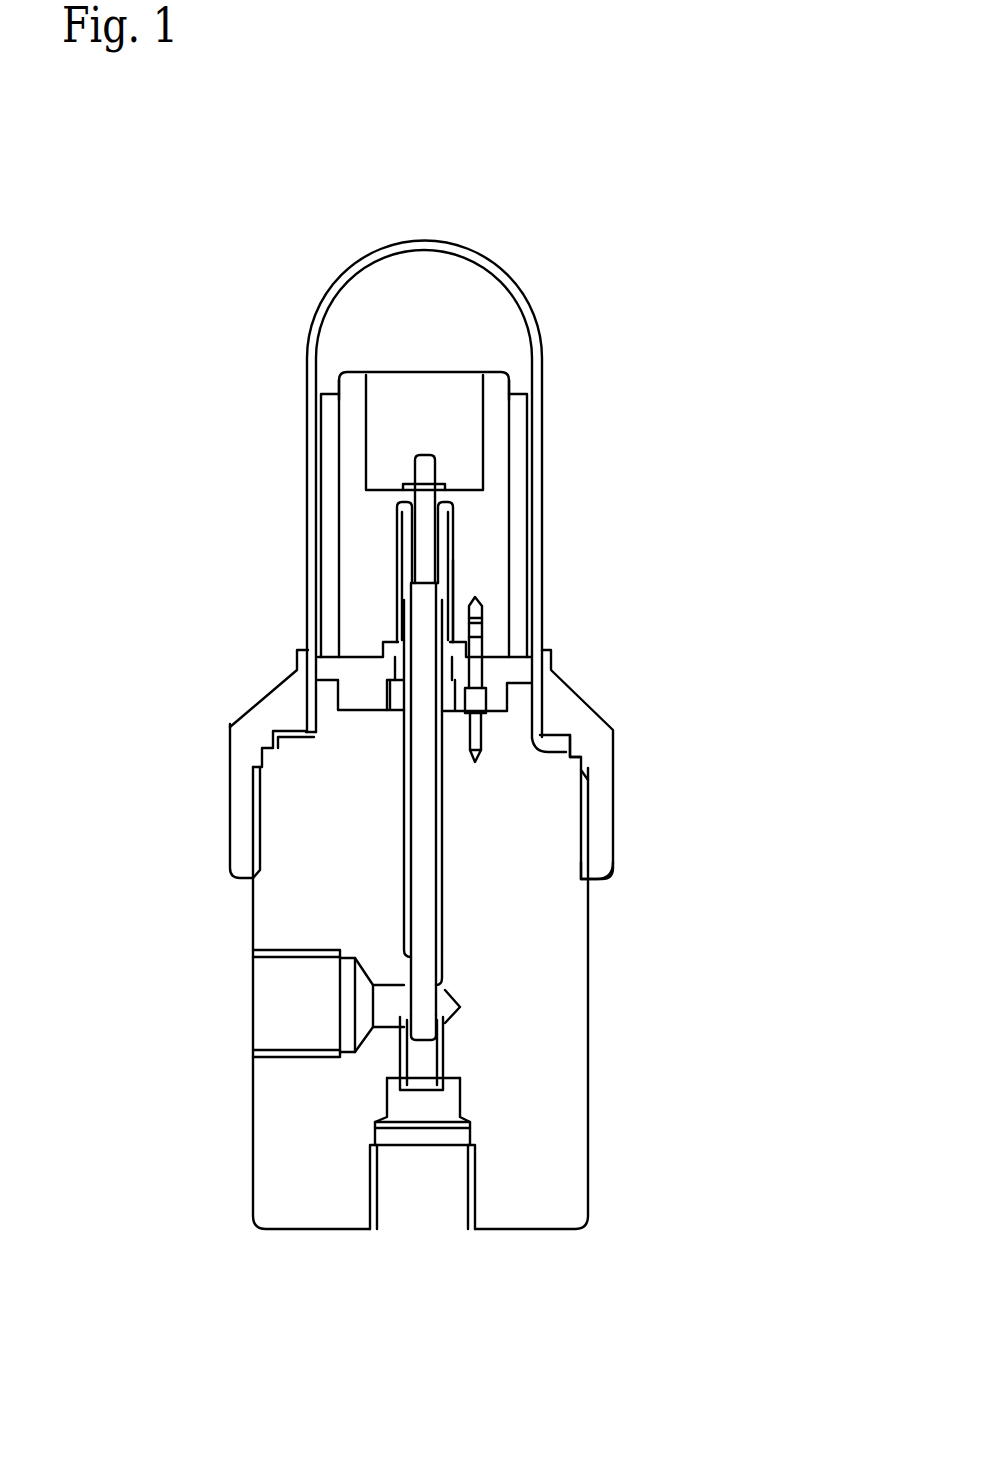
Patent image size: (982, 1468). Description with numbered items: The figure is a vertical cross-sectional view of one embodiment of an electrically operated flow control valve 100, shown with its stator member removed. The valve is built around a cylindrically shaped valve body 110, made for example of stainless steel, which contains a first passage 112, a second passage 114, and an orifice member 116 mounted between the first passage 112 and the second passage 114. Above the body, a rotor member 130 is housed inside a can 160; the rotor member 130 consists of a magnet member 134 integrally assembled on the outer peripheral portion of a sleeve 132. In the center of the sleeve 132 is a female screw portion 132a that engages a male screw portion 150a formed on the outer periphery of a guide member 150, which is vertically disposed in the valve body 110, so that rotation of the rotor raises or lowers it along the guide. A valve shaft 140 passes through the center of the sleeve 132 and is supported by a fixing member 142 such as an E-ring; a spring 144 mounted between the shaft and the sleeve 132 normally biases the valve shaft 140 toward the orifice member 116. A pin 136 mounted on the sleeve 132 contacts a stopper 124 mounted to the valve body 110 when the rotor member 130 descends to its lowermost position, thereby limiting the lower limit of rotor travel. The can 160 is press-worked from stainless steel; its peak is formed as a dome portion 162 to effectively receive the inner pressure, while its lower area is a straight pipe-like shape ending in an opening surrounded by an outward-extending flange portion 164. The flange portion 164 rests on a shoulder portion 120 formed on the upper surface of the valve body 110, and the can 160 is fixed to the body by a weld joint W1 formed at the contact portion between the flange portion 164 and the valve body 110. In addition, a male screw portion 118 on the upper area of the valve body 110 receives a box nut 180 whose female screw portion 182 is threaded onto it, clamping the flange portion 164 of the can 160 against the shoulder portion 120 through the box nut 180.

The electrically operated flow control valve 100 is at (740, 580).
The valve body 110 is at (545, 1195).
The first passage 112 is at (280, 1008).
The second passage 114 is at (418, 1207).
The orifice member 116 is at (385, 1081).
The male screw portion 118 is at (262, 850).
The shoulder portion 120 is at (292, 726).
The stopper 124 is at (481, 754).
The rotor member 130 is at (372, 306).
The sleeve 132 is at (353, 426).
The female screw portion 132a is at (403, 615).
The magnet member 134 is at (330, 503).
The pin 136 is at (483, 630).
The valve shaft 140 is at (411, 905).
The fixing member 142 is at (407, 478).
The spring 144 is at (453, 527).
The guide member 150 is at (403, 697).
The male screw portion 150a is at (452, 568).
The can 160 is at (545, 355).
The dome portion 162 is at (448, 244).
The flange portion 164 is at (541, 733).
The box nut 180 is at (603, 817).
The female screw portion 182 is at (584, 868).
The weld joint W1 is at (572, 732).